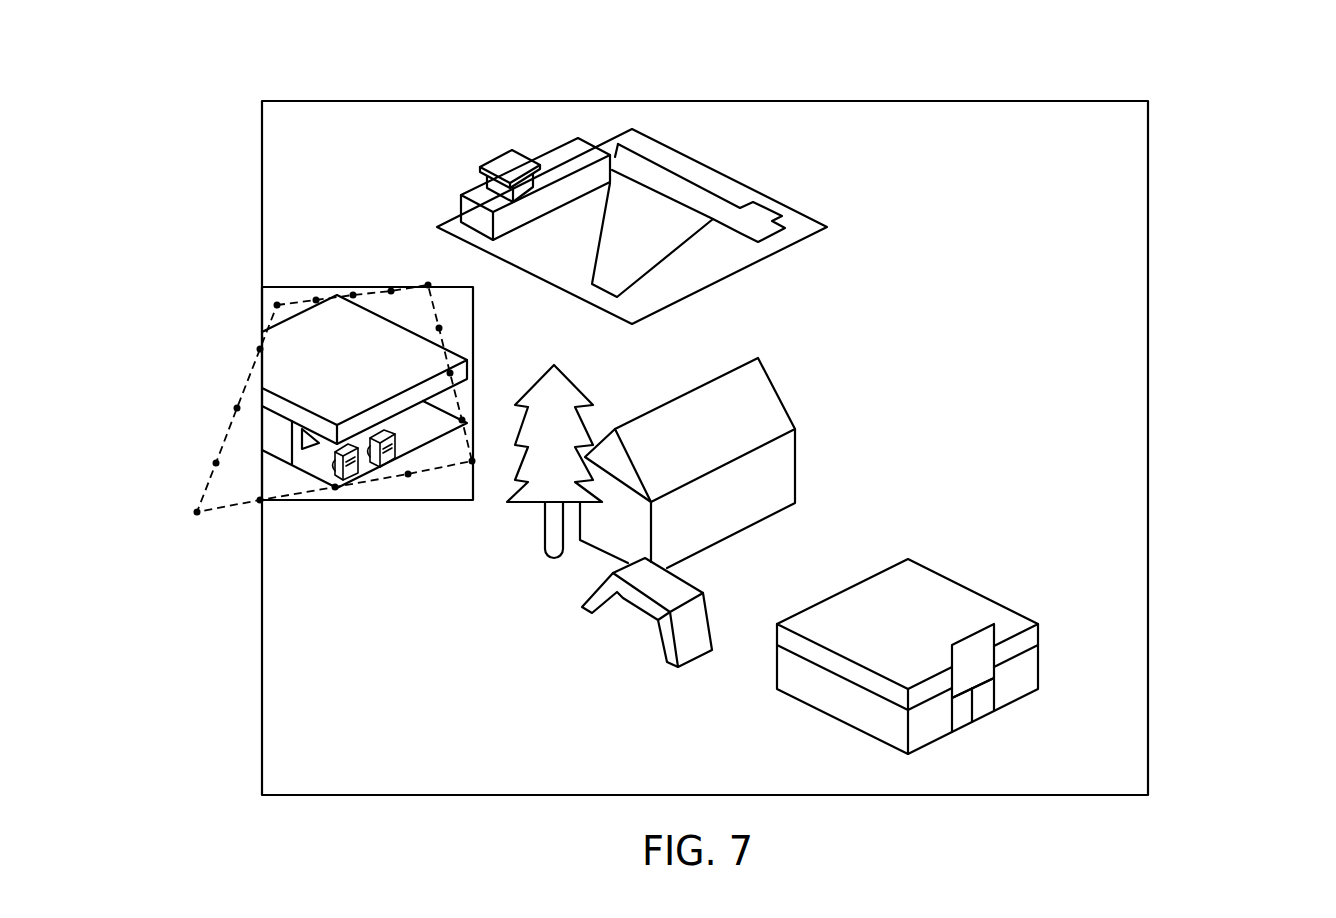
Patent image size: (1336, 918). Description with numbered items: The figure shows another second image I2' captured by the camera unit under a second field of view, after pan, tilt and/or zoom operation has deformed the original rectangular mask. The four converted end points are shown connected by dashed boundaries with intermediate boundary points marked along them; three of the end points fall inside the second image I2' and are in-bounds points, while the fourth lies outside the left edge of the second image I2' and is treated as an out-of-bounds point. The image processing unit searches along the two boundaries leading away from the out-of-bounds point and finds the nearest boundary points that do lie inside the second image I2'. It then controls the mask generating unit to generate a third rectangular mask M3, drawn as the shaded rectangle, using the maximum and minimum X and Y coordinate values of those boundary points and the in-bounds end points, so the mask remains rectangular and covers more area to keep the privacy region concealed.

The second image I2' is at (784, 413).
The third rectangular mask M3 is at (320, 286).